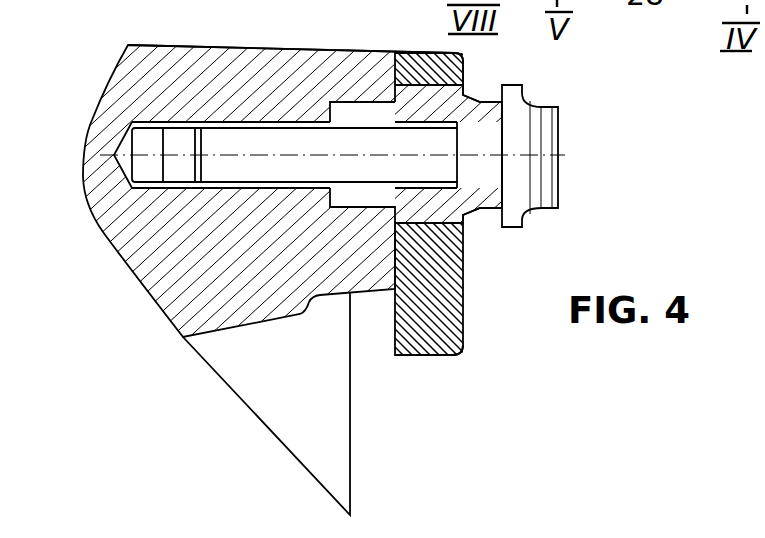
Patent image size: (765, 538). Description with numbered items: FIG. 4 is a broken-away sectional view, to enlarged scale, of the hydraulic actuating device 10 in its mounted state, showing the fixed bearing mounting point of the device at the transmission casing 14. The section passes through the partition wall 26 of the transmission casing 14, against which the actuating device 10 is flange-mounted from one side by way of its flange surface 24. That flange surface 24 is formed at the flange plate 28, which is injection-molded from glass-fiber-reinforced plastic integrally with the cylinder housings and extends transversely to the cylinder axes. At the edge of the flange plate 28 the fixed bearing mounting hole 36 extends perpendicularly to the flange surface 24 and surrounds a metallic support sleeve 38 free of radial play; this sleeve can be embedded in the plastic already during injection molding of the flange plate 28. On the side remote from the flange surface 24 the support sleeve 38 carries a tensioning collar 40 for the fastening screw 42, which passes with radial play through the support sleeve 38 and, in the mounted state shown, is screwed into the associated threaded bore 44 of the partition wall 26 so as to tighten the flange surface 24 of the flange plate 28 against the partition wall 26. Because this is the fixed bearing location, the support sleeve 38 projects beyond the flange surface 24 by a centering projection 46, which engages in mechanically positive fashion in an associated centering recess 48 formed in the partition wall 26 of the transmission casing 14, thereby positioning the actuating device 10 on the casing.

The hydraulic actuating device 10 is at (425, 363).
The transmission casing 14 is at (184, 44).
The flange surface 24 is at (387, 68).
The partition wall 26 is at (264, 104).
The flange plate 28 is at (445, 279).
The fixed bearing mounting hole 36 is at (463, 58).
The support sleeve 38 is at (511, 71).
The tensioning collar 40 is at (470, 228).
The fastening screw 42 is at (361, 168).
The threaded bore 44 is at (176, 170).
The centering projection 46 is at (358, 200).
The centering recess 48 is at (350, 108).